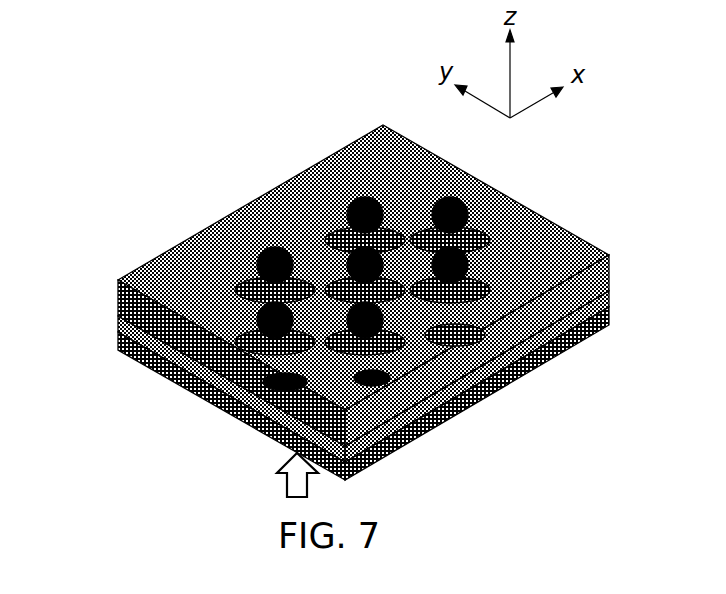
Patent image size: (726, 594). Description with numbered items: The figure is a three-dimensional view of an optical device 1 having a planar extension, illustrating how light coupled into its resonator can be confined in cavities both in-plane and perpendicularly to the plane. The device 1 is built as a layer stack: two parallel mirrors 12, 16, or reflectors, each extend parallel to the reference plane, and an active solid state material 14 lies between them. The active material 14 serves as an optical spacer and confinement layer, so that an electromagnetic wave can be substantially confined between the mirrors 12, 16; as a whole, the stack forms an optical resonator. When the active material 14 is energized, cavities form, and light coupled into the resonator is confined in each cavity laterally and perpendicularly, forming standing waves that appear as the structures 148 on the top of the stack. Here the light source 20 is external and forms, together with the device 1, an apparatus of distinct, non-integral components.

The device 1 is at (333, 331).
The mirror 12 is at (118, 352).
The active material 14 is at (116, 320).
The mirror 16 is at (116, 281).
The structures 148 is at (492, 221).
The light source 20 is at (308, 481).